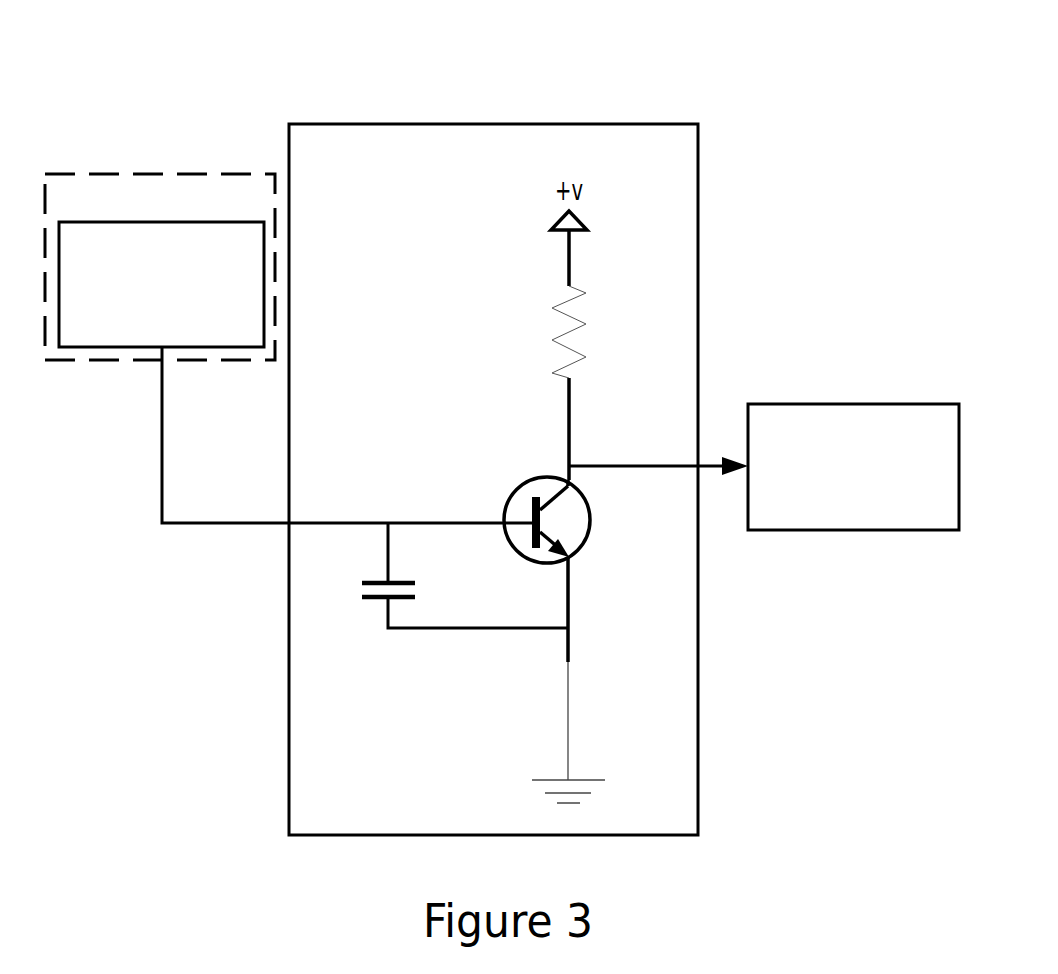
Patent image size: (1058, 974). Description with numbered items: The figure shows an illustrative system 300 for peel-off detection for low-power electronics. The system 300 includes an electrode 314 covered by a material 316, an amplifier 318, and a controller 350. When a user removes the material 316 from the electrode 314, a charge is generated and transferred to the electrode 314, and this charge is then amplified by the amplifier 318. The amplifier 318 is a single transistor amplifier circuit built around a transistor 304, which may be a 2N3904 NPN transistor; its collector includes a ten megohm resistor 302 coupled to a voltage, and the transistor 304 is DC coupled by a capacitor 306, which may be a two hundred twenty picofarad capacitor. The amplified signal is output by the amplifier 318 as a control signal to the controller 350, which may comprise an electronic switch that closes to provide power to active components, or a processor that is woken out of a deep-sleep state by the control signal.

The system 300 is at (332, 100).
The resistor 302 is at (593, 368).
The transistor 304 is at (577, 569).
The capacitor 306 is at (433, 575).
The electrode 314 is at (235, 297).
The material 316 is at (238, 209).
The amplifier 318 is at (575, 158).
The controller 350 is at (878, 499).